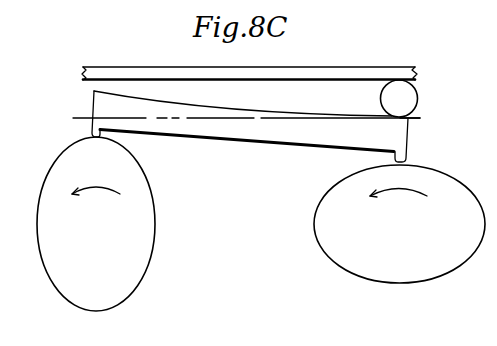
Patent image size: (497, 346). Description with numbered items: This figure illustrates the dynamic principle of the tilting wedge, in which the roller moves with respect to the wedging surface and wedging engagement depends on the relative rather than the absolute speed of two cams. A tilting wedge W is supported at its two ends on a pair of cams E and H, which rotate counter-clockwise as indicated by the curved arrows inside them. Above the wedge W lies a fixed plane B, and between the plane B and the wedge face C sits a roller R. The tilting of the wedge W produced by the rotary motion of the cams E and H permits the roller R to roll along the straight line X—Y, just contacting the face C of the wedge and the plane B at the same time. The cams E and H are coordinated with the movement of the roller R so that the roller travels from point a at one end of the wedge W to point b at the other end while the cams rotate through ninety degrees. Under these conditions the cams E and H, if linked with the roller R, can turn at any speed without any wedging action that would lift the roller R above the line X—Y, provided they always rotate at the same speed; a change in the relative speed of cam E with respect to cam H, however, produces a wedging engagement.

The plane B is at (254, 64).
The roller R is at (399, 98).
The face of the wedge C is at (243, 103).
The point b of wedge b is at (89, 111).
The point a of wedge a is at (406, 140).
The wedge W is at (247, 138).
The line X—Y end X is at (239, 118).
The line X—Y end Y is at (416, 118).
The cam H is at (96, 224).
The cam E is at (399, 224).